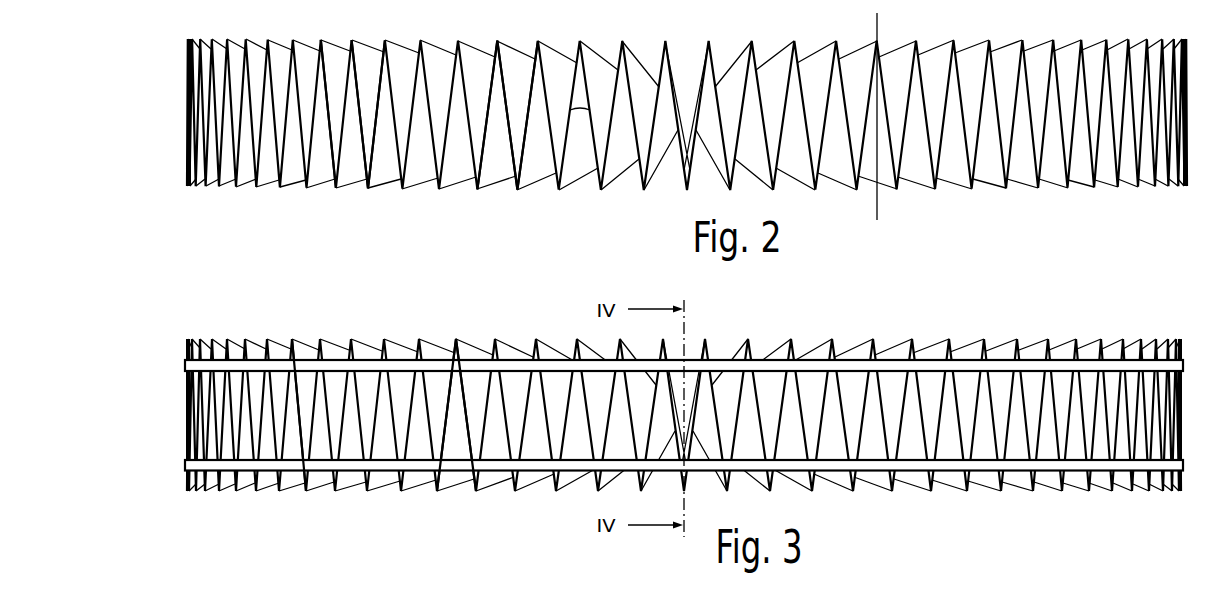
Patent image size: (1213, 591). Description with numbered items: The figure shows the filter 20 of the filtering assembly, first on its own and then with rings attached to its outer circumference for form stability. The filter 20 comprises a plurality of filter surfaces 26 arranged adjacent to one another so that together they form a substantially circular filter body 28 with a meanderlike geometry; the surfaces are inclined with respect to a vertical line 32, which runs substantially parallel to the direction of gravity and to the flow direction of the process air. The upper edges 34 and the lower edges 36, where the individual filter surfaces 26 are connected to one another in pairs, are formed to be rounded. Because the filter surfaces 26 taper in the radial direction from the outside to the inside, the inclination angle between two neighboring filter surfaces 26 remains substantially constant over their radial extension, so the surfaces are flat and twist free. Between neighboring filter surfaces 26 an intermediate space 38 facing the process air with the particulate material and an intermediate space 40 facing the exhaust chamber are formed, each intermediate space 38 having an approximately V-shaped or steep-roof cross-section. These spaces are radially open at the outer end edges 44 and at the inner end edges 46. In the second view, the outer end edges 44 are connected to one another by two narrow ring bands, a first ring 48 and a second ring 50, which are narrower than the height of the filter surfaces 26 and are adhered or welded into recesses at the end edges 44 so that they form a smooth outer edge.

In FIG. 2, the filter 20 is at (162, 192).
In FIG. 3, the filter 20 is at (157, 451).
In FIG. 2, the filter surfaces 26 is at (495, 133).
In FIG. 2, the filter body 28 is at (471, 40).
In FIG. 2, the vertical line 32 is at (878, 27).
In FIG. 2, the upper edges 34 is at (273, 39).
In FIG. 2, the lower edges 36 is at (285, 189).
In FIG. 2, the intermediate space 38 is at (377, 144).
In FIG. 3, the intermediate space 38 is at (449, 430).
In FIG. 2, the intermediate space 40 is at (514, 75).
In FIG. 2, the outer end edges 44 is at (332, 83).
In FIG. 3, the outer end edges 44 is at (303, 420).
In FIG. 3, the inner end edges 46 is at (799, 586).
In FIG. 3, the first ring 48 is at (428, 367).
In FIG. 3, the second ring 50 is at (382, 463).